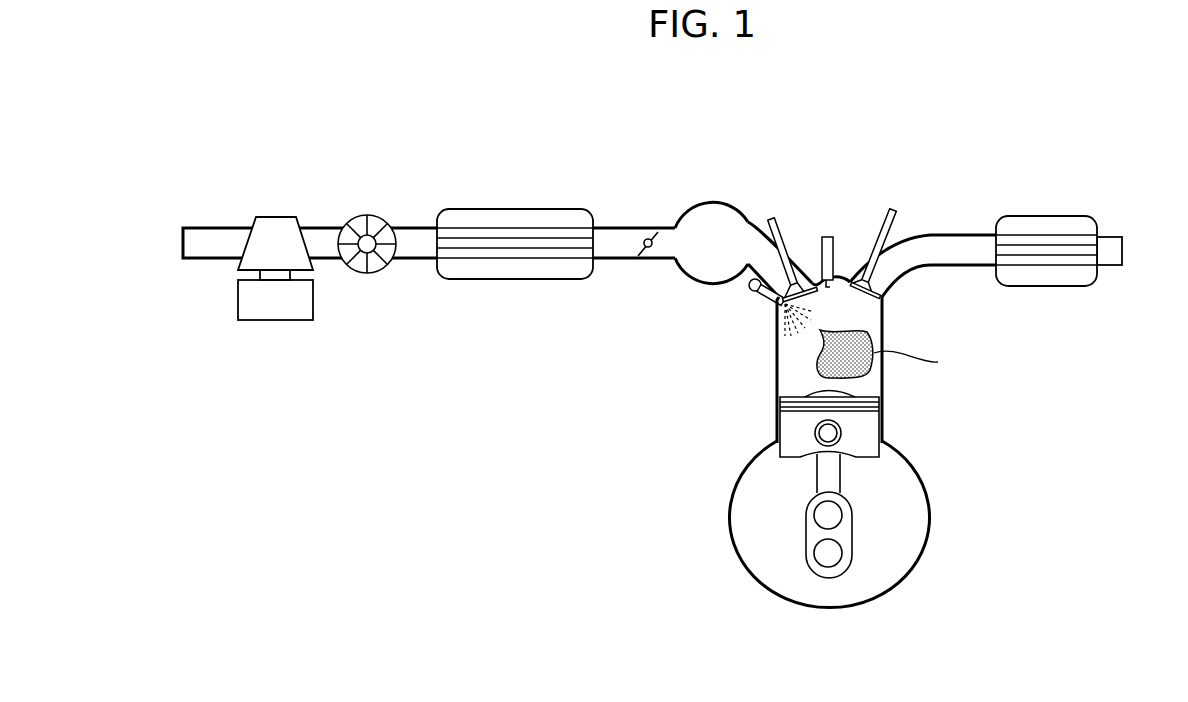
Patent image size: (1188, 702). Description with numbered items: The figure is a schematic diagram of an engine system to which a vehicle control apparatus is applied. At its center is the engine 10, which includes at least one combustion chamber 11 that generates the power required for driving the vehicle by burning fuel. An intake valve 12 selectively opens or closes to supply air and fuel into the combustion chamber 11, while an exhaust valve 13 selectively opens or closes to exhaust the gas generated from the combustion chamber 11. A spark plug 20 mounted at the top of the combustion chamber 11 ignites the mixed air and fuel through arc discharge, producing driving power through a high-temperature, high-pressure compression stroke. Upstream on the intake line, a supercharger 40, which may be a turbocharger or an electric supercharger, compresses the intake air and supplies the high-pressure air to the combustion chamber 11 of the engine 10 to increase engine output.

The engine 10 is at (847, 378).
The combustion chamber 11 is at (855, 300).
The intake valve 12 is at (775, 215).
The exhaust valve 13 is at (900, 215).
The spark plug 20 is at (822, 240).
The supercharger 40 is at (263, 205).